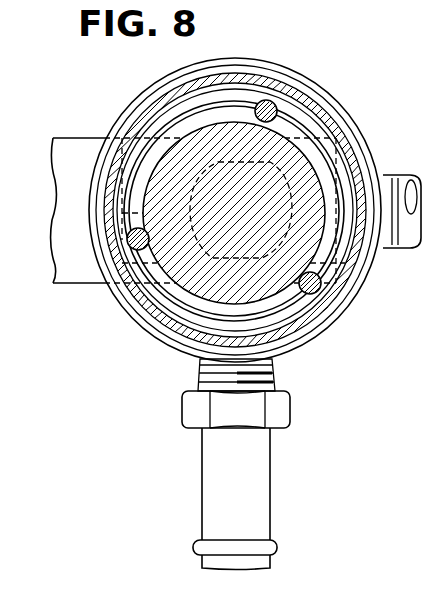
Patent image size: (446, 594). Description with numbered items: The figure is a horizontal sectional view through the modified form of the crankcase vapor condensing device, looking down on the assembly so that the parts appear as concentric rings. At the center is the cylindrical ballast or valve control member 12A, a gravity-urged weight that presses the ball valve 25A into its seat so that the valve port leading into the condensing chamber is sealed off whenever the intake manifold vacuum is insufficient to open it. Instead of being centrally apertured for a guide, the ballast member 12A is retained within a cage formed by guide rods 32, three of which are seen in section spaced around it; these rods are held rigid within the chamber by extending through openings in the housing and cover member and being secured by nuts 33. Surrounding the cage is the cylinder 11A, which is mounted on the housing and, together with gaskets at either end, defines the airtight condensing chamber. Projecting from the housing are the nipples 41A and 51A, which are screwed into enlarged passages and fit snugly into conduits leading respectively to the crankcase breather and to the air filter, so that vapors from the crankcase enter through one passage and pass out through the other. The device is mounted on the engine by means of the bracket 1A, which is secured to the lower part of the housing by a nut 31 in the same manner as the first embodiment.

The bracket 1A is at (76, 142).
The cylinder 11A is at (291, 328).
The ballast or valve control member 12A is at (203, 293).
The ball valve 25A is at (144, 333).
The nut 31 is at (158, 86).
The guide rods 32 is at (275, 106).
The nuts 33 is at (226, 134).
The nipple 41A is at (394, 250).
The nipple 51A is at (220, 480).